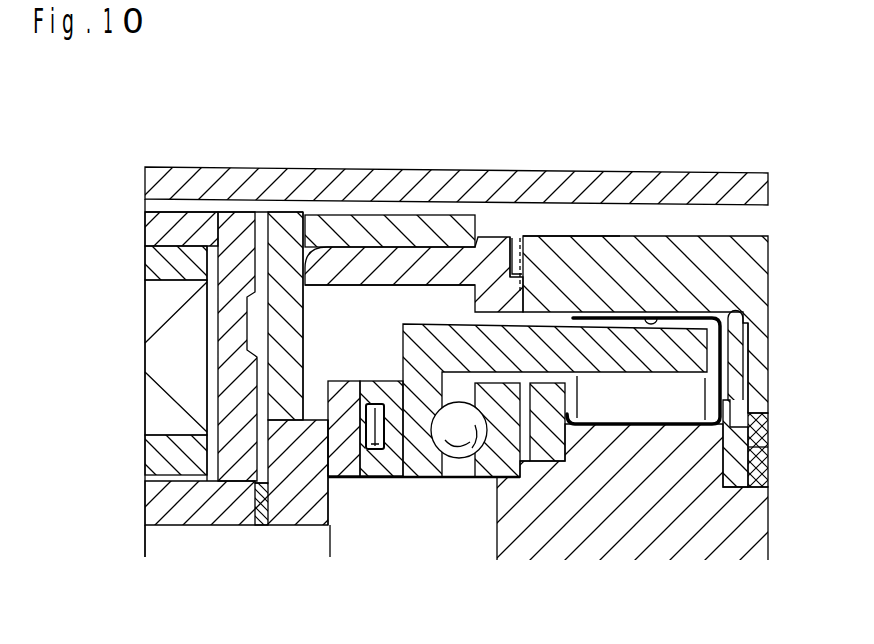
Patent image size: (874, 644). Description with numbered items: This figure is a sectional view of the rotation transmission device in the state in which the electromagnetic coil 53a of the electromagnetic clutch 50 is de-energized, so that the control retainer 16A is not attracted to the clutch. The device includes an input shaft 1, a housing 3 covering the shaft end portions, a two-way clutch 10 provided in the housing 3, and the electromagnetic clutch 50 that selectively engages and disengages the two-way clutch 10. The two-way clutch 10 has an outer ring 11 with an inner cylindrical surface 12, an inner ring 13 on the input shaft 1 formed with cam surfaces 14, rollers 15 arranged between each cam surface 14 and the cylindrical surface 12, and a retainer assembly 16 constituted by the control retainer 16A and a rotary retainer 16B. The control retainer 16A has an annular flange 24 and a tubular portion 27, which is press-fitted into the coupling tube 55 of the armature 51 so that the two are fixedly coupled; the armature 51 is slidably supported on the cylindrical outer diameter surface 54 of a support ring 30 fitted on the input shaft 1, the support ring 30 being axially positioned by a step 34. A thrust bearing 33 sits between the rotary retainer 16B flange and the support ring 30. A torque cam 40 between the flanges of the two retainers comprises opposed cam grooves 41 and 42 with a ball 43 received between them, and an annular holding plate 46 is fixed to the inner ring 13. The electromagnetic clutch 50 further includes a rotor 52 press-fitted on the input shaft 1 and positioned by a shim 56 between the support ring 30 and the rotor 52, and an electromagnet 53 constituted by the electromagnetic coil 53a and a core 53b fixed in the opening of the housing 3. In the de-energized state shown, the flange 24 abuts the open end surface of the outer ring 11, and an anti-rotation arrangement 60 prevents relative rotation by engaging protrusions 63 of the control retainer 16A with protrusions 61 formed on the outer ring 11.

The input shaft 1 is at (247, 543).
The housing 3 is at (172, 166).
The two-way clutch 10 is at (613, 227).
The outer ring 11 is at (655, 315).
The cylindrical surface 12 is at (661, 316).
The inner ring 13 is at (650, 456).
The cam surfaces 14 is at (681, 420).
The rollers 15 is at (695, 326).
The retainer assembly 16 is at (477, 229).
The control retainer 16A is at (441, 238).
The rotary retainer 16B is at (574, 227).
The annular flange 24 is at (500, 472).
The tubular portion 27 is at (301, 262).
The support ring 30 is at (289, 502).
The thrust bearing 33 is at (375, 452).
The step 34 is at (316, 524).
The torque cam 40 is at (432, 397).
The cam grooves 41 is at (465, 462).
The cam grooves 42 is at (412, 479).
The ball 43 is at (457, 455).
The holding plate 46 is at (548, 456).
The electromagnetic clutch 50 is at (212, 204).
The armature 51 is at (289, 258).
The rotor 52 is at (243, 230).
The electromagnet 53 is at (152, 224).
The electromagnetic coil 53a is at (158, 306).
The core 53b is at (150, 268).
The cylindrical outer diameter surface 54 is at (313, 418).
The coupling tube 55 is at (365, 260).
The shim 56 is at (258, 512).
The anti-rotation arrangement 60 is at (519, 220).
The protrusions 61 is at (527, 236).
The protrusions 63 is at (500, 228).